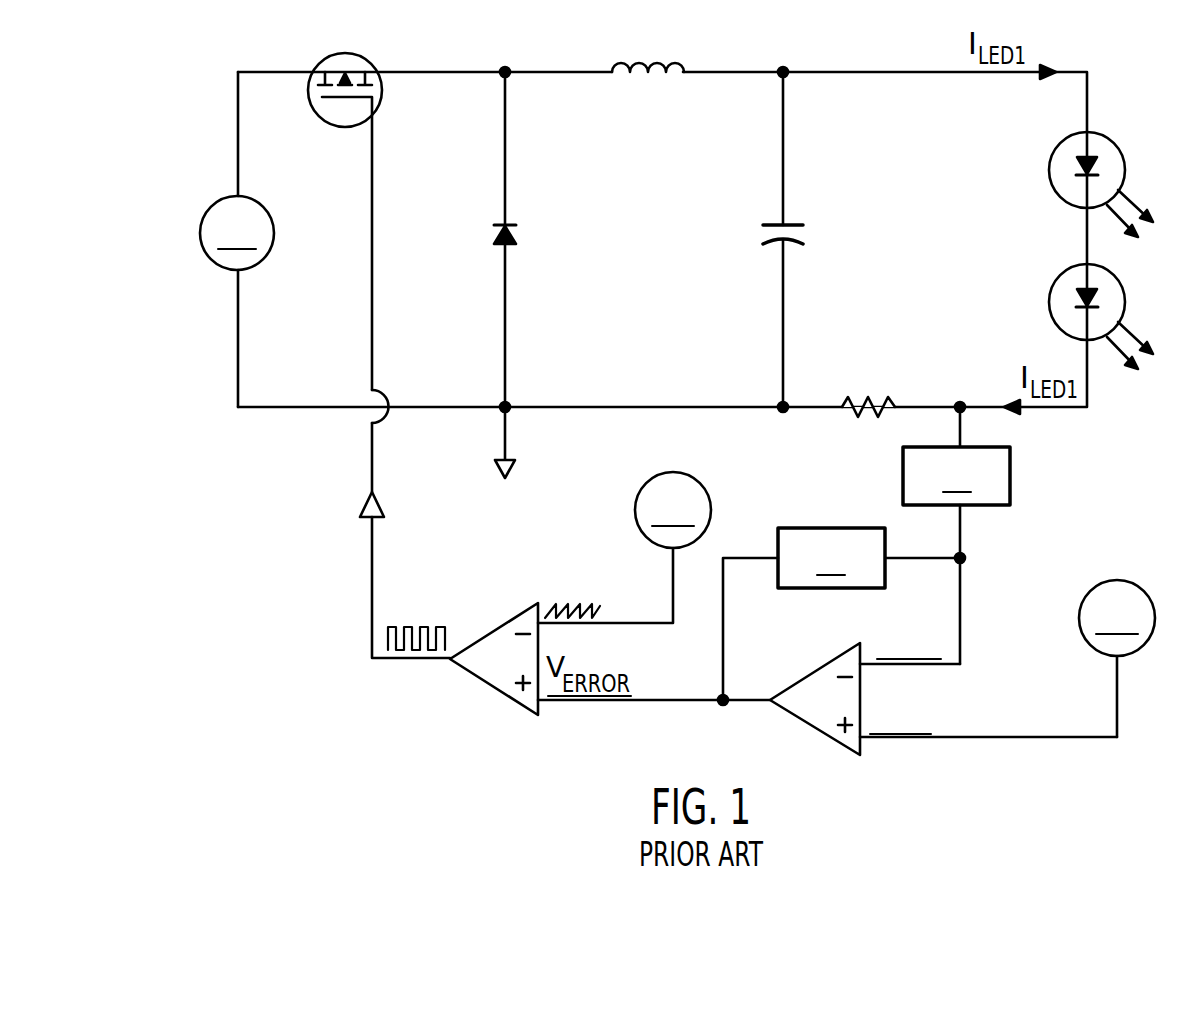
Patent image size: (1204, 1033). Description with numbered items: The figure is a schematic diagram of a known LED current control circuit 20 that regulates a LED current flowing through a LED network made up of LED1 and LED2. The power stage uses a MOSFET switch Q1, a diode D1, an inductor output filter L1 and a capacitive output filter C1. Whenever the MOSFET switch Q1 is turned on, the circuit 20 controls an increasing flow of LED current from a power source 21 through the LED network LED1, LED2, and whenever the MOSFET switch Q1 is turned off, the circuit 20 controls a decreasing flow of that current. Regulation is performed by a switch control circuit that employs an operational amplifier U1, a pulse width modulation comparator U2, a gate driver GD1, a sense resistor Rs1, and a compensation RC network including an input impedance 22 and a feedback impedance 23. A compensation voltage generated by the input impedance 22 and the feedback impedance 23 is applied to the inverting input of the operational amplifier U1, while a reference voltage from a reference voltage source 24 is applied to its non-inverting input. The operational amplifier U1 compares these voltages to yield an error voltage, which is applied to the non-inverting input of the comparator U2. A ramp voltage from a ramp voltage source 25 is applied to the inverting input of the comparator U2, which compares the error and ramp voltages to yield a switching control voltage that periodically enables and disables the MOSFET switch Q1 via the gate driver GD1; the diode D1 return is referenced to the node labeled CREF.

The LED current control circuit 20 is at (312, 617).
The power source 21 is at (207, 207).
The input impedance 22 is at (1010, 478).
The feedback impedance 23 is at (820, 528).
The reference voltage source 24 is at (1134, 582).
The ramp voltage source 25 is at (650, 476).
The MOSFET switch Q1 is at (378, 103).
The diode D1 is at (488, 239).
The inductor output filter L1 is at (648, 50).
The capacitive output filter C1 is at (766, 239).
The LED LED1 is at (1052, 157).
The LED LED2 is at (1052, 290).
The sense resistor Rs1 is at (868, 390).
The operational amplifier U1 is at (806, 720).
The PWM comparator U2 is at (496, 690).
The gate driver GD1 is at (380, 574).
The reference ground CREF is at (507, 462).